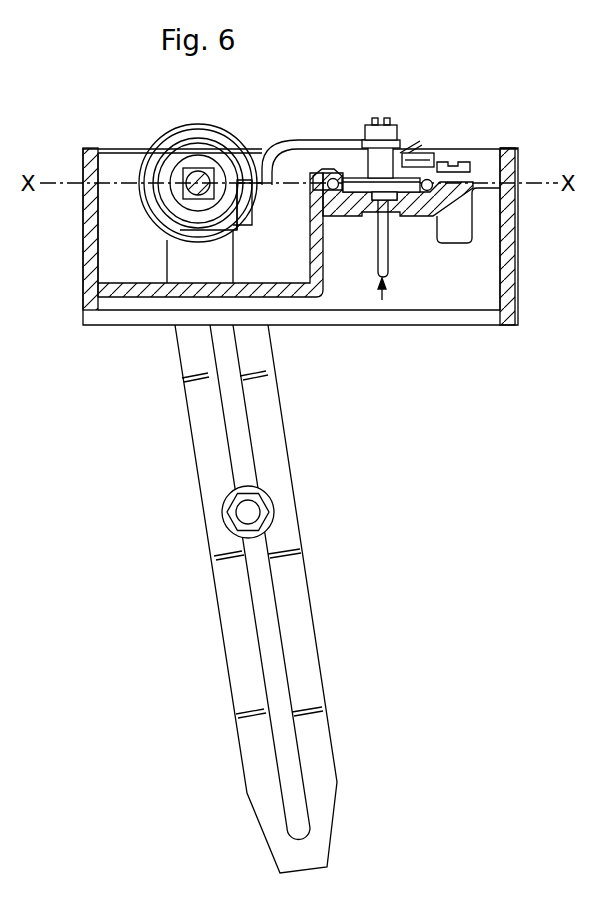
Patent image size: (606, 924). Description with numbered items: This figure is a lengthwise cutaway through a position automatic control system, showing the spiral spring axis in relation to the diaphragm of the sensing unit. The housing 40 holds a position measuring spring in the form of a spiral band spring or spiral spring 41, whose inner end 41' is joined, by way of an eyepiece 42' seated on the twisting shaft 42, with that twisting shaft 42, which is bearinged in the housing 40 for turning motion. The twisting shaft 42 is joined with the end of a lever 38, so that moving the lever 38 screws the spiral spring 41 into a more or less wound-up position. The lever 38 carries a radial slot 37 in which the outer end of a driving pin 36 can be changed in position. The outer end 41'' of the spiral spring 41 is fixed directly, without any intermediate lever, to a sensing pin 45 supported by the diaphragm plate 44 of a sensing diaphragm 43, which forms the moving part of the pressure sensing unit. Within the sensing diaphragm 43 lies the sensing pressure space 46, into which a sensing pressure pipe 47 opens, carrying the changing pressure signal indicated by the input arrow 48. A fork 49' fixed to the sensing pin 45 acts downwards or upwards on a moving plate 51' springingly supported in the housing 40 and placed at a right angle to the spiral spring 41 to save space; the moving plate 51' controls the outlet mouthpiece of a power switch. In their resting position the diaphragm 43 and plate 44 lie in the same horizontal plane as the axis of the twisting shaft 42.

The driving pin 36 is at (250, 510).
The slot 37 is at (262, 593).
The lever 38 is at (280, 440).
The housing 40 is at (93, 280).
The spiral spring 41 is at (191, 169).
The inner end 41' is at (256, 162).
The outer end 41'' is at (315, 140).
The twisting shaft 42 is at (201, 143).
The eyepiece 42' is at (156, 161).
The sensing diaphragm 43 is at (335, 170).
The diaphragm plate 44 is at (350, 200).
The sensing pin 45 is at (377, 162).
The sensing pressure space 46 is at (410, 200).
The sensing pressure pipe 47 is at (385, 257).
The input arrow 48 is at (382, 300).
The fork 49' is at (423, 126).
The moving plate 51' is at (445, 140).